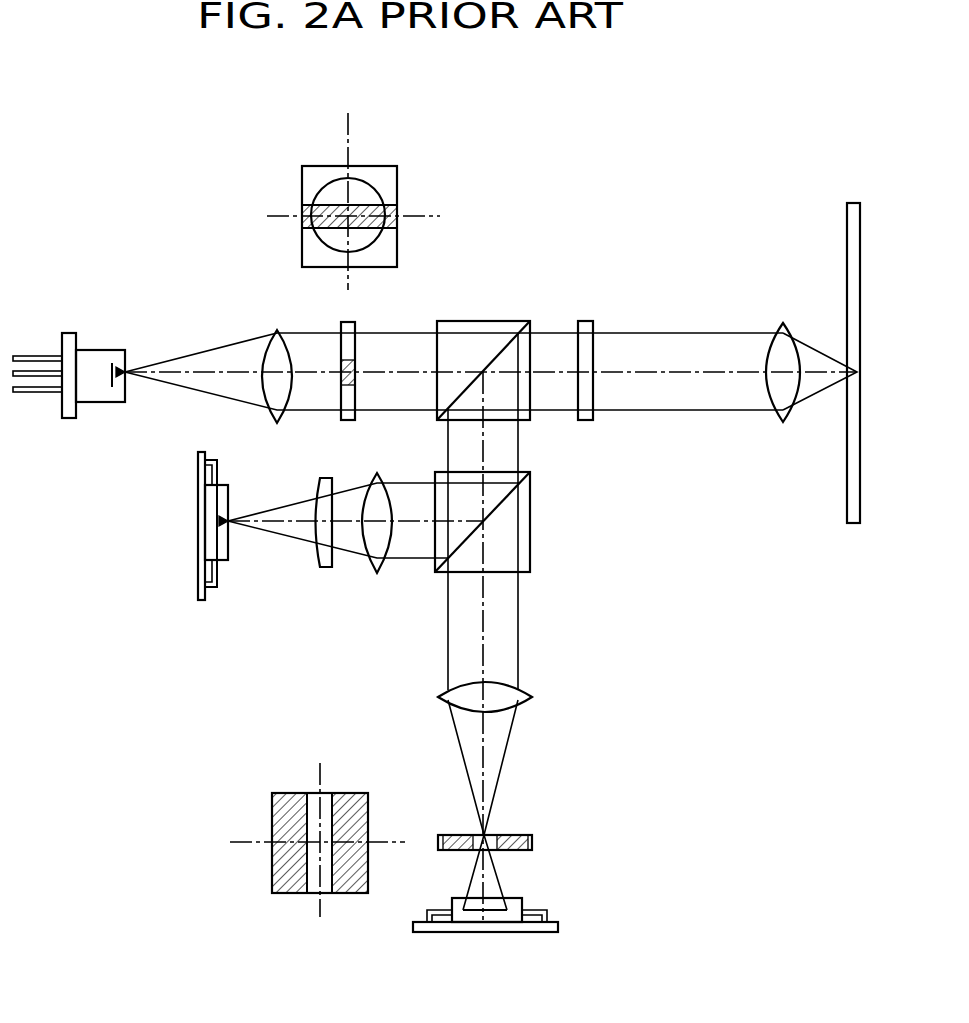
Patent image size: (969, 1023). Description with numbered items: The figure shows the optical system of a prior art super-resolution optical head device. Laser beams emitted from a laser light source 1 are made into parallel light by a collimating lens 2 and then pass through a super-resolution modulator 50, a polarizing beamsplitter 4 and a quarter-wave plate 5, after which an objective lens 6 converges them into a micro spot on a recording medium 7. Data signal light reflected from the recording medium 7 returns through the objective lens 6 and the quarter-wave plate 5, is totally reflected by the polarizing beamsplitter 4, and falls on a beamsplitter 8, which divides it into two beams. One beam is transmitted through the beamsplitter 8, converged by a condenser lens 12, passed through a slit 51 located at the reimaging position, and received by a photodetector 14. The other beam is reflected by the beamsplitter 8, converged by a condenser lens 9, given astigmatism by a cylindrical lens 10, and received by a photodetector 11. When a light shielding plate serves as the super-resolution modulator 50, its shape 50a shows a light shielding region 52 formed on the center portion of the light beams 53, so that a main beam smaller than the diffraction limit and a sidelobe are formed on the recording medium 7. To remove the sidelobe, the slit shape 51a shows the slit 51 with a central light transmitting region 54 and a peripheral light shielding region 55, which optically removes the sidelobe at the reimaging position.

The laser light source 1 is at (70, 334).
The collimating lens 2 is at (277, 333).
The super-resolution modulator 50 is at (345, 322).
The polarizing beamsplitter 4 is at (495, 325).
The quarter-wave plate 5 is at (588, 322).
The objective lens 6 is at (783, 325).
The recording medium 7 is at (847, 492).
The beamsplitter 8 is at (528, 567).
The condenser lens 9 is at (378, 575).
The cylindrical lens 10 is at (323, 568).
The photodetector 11 is at (198, 517).
The condenser lens 12 is at (532, 697).
The slit 51 is at (532, 843).
The photodetector 14 is at (515, 902).
The shape of the light shielding plate 50a is at (415, 158).
The light shielding region 52 is at (330, 203).
The light beams 53 is at (327, 200).
The slit shape 51a is at (263, 785).
The light transmitting region 54 is at (325, 887).
The light shielding region 55 is at (293, 887).